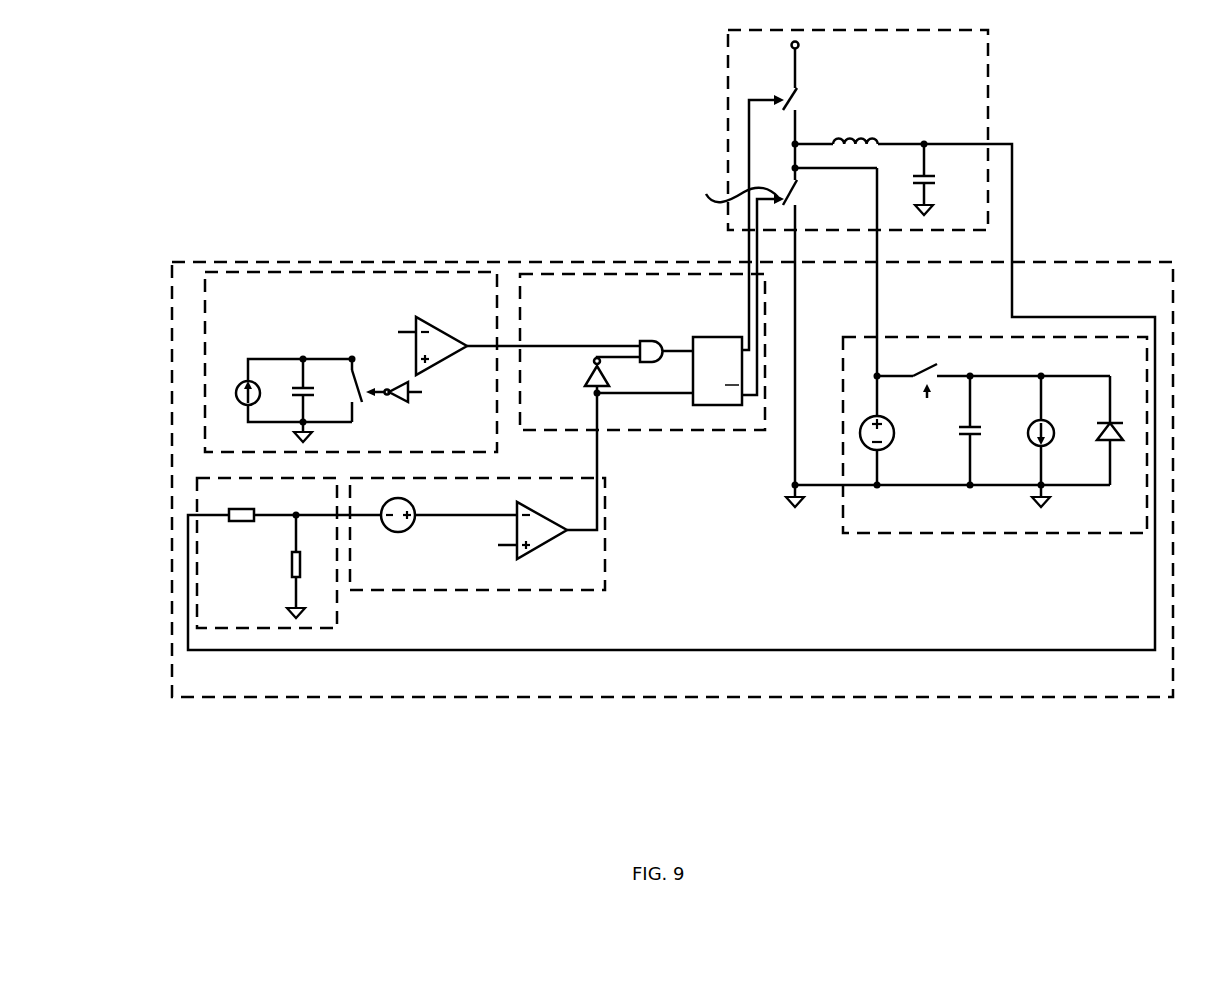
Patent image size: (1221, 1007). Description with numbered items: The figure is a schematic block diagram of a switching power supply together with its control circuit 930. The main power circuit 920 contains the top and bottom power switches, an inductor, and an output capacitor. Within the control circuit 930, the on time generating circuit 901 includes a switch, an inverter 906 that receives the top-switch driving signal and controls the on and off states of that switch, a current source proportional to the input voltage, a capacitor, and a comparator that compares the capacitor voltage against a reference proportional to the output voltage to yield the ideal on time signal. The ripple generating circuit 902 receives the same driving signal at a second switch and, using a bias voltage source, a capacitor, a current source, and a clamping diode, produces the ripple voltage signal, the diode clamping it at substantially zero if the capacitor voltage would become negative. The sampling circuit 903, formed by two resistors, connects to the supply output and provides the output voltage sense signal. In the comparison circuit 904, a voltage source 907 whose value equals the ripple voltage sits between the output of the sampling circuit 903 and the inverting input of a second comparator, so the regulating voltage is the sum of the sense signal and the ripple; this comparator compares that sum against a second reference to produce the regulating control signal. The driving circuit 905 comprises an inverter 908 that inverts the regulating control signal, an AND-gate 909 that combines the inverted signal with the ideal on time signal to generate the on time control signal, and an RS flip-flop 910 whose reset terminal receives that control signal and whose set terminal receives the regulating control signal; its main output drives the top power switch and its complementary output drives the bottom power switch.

The on time generating circuit 901 is at (254, 305).
The ripple generating circuit 902 is at (906, 521).
The sampling circuit 903 is at (244, 619).
The comparison circuit 904 is at (589, 582).
The driving circuit 905 is at (567, 305).
The inverter 906 is at (392, 398).
The voltage source 907 is at (397, 532).
The inverter 908 is at (588, 378).
The AND-gate 909 is at (655, 340).
The RS flip-flop 910 is at (719, 337).
The main power circuit 920 is at (968, 61).
The control circuit 930 is at (751, 689).